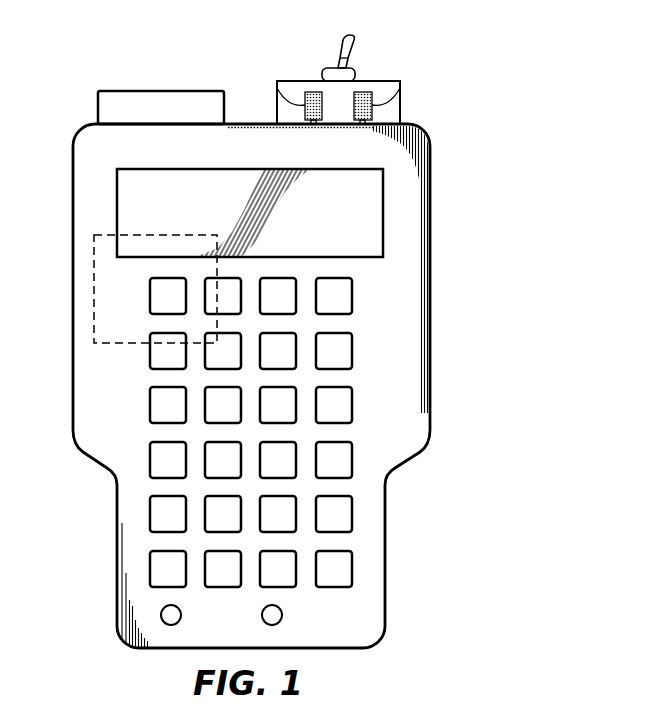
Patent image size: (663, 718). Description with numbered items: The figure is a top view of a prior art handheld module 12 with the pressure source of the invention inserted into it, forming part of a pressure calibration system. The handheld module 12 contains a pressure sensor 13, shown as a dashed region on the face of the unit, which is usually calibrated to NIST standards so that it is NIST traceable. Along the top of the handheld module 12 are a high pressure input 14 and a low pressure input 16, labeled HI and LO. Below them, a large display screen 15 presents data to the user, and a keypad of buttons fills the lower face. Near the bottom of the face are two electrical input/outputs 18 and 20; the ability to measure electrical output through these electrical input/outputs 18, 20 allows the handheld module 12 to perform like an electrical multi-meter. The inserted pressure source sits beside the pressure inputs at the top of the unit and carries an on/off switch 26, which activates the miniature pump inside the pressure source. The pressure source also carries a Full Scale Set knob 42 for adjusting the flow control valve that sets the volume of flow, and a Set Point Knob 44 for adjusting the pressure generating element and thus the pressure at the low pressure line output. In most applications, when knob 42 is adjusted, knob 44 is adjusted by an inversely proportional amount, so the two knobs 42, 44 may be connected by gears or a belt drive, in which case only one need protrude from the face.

The handheld module 12 is at (480, 218).
The pressure sensor 13 is at (94, 290).
The high pressure input 14 is at (202, 91).
The display screen 15 is at (367, 245).
The low pressure input 16 is at (122, 91).
The electrical input/output 18 is at (181, 615).
The electrical input/output 20 is at (282, 615).
The on/off switch 26 is at (340, 55).
The Full Scale Set knob 42 is at (400, 86).
The Set Point Knob 44 is at (277, 86).